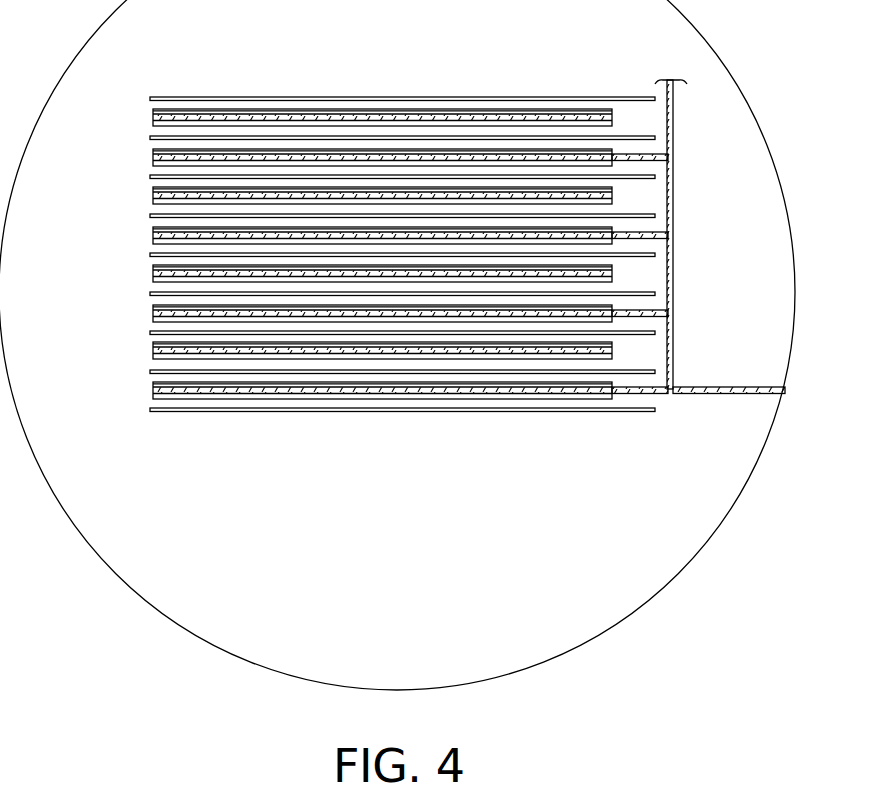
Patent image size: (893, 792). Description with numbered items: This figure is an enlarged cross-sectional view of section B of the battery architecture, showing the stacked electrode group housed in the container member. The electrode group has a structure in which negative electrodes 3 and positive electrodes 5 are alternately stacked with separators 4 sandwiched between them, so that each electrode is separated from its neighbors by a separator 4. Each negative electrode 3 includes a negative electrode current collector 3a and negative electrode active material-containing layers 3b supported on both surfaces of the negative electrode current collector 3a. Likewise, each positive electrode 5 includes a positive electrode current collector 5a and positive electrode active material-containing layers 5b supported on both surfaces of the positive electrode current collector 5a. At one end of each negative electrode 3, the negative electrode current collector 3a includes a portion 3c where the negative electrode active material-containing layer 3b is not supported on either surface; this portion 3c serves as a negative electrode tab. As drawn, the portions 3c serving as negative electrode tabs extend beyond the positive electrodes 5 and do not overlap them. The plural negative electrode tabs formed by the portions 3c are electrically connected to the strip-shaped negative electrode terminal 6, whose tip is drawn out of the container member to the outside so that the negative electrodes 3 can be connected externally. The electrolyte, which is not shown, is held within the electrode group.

The negative electrode 3 is at (332, 331).
The negative electrode current collector 3a is at (167, 390).
The negative electrode active material-containing layer 3b is at (158, 383).
The portion serving as negative electrode tab 3c is at (644, 154).
The separator 4 is at (470, 97).
The positive electrode 5 is at (313, 261).
The positive electrode current collector 5a is at (157, 353).
The positive electrode active material-containing layer 5b is at (157, 347).
The strip-shaped negative electrode terminal 6 is at (723, 388).
The section B is at (675, 578).